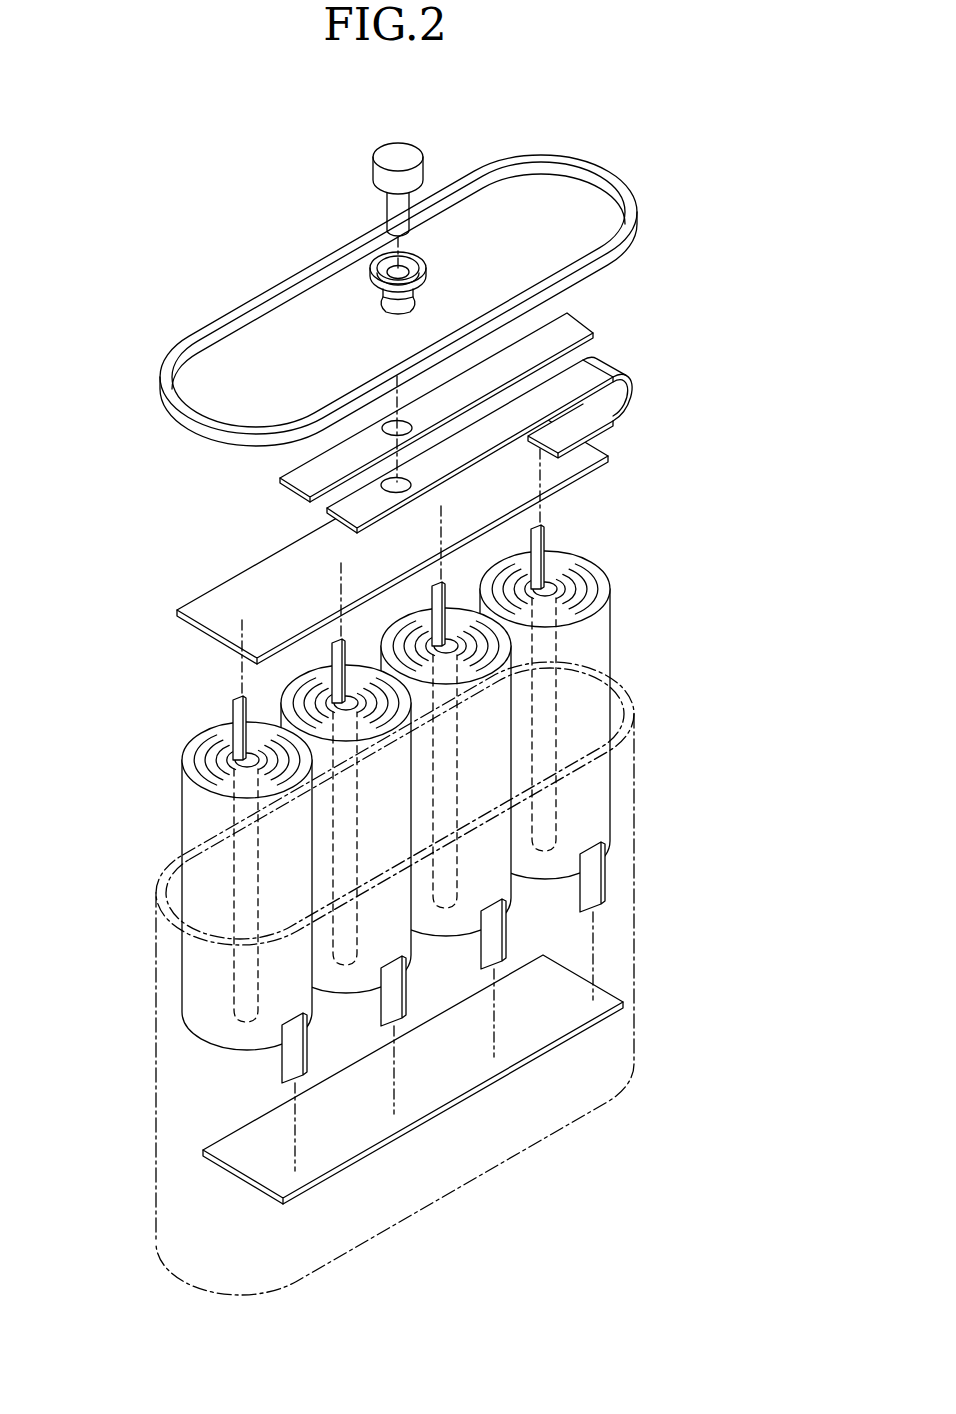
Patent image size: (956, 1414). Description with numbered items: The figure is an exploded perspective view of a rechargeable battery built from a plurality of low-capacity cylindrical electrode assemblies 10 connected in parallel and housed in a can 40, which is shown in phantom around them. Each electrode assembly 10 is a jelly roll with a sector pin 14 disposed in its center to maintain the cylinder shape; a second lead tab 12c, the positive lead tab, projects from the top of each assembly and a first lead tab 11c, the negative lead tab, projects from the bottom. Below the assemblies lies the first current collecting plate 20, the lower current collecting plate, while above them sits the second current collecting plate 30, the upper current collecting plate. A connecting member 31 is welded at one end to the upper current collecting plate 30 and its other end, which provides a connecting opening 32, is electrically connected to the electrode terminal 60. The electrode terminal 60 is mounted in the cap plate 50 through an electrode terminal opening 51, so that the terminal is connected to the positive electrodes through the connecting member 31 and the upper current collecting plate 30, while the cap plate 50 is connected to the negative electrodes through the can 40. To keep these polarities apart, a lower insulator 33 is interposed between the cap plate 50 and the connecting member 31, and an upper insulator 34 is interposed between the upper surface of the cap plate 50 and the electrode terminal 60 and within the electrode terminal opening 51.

The electrode assembly 10 is at (387, 766).
The first lead tab 11c is at (593, 884).
The second lead tab 12c is at (238, 708).
The sector pin 14 is at (230, 958).
The first current collecting plate 20 is at (553, 1019).
The second current collecting plate 30 is at (580, 457).
The connecting member 31 is at (600, 370).
The connecting opening 32 is at (497, 424).
The lower insulator 33 is at (305, 483).
The upper insulator 34 is at (372, 264).
The can 40 is at (636, 955).
The cap plate 50 is at (573, 192).
The electrode terminal opening 51 is at (384, 310).
The electrode terminal 60 is at (386, 154).